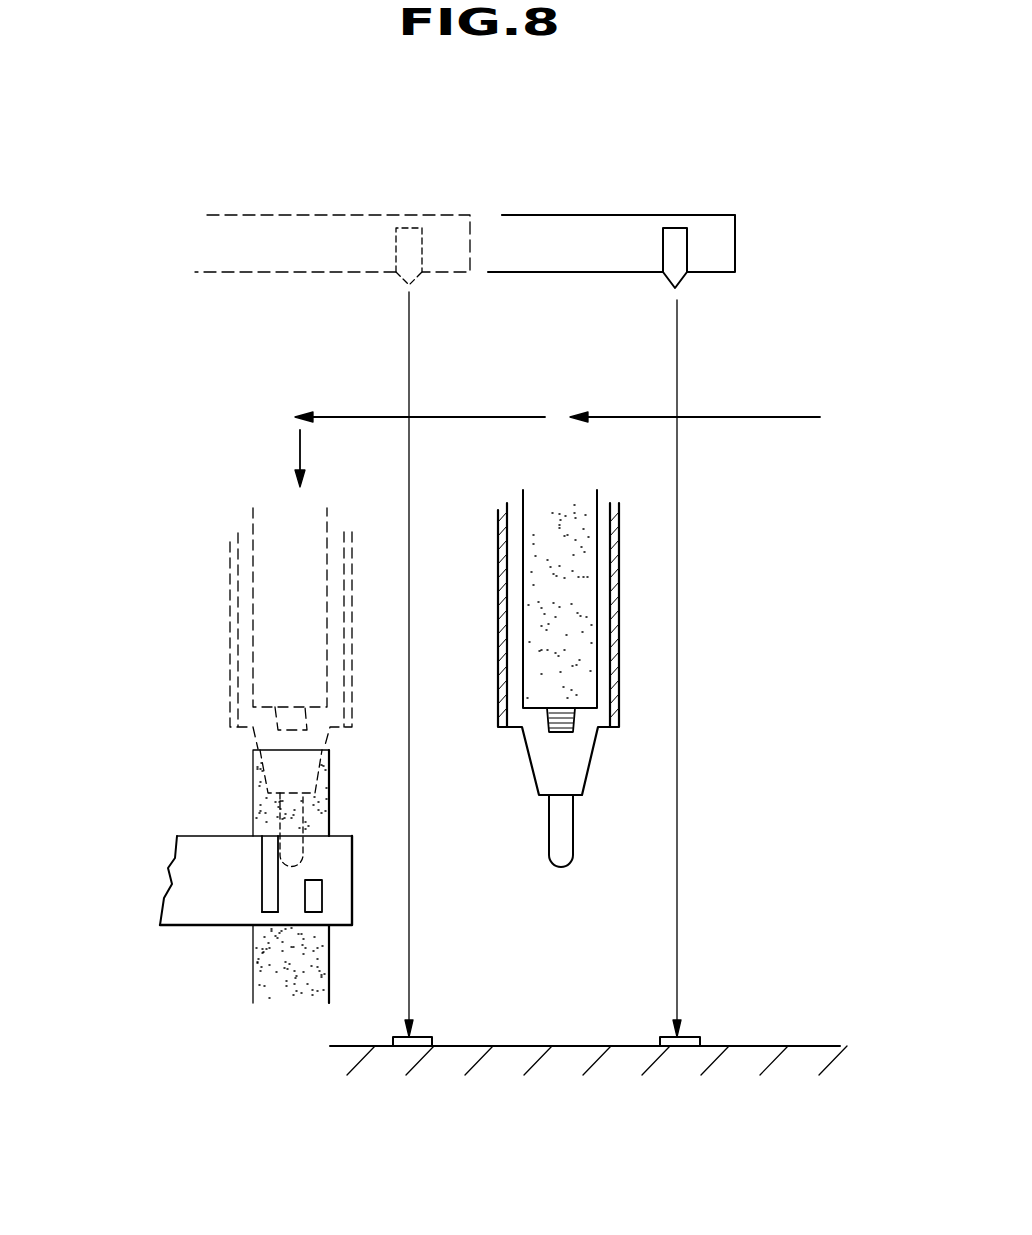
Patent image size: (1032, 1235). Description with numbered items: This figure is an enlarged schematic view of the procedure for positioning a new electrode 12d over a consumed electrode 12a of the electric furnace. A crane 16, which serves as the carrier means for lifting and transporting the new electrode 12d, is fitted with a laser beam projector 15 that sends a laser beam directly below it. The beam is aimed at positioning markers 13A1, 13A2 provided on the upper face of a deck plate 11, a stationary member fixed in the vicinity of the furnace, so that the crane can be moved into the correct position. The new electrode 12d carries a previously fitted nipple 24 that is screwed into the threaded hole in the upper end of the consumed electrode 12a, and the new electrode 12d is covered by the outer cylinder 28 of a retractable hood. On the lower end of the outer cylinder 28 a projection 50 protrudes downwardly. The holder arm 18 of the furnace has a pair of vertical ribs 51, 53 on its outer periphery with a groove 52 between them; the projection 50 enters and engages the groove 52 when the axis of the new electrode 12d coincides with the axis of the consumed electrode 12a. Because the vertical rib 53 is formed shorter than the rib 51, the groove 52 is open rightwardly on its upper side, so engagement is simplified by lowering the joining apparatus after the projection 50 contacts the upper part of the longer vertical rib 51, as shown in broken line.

The deck plate 11 is at (585, 1055).
The electrode 12a is at (265, 992).
The new electrode 12d is at (270, 607).
The positioning marker 13A1 is at (690, 1035).
The positioning marker 13A2 is at (425, 1035).
The laser beam projector 15 is at (409, 230).
The crane 16 is at (518, 198).
The holder arm 18 is at (185, 860).
The nipple 24 is at (555, 733).
The outer cylinder 28 is at (498, 600).
The projection 50 is at (568, 850).
The vertical rib 51 is at (262, 868).
The groove 52 is at (280, 900).
The vertical rib 53 is at (318, 895).